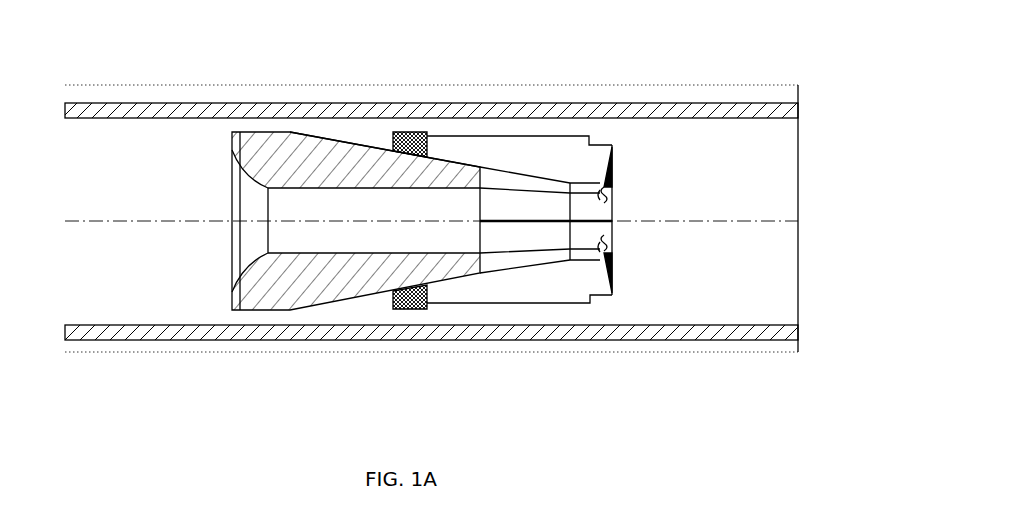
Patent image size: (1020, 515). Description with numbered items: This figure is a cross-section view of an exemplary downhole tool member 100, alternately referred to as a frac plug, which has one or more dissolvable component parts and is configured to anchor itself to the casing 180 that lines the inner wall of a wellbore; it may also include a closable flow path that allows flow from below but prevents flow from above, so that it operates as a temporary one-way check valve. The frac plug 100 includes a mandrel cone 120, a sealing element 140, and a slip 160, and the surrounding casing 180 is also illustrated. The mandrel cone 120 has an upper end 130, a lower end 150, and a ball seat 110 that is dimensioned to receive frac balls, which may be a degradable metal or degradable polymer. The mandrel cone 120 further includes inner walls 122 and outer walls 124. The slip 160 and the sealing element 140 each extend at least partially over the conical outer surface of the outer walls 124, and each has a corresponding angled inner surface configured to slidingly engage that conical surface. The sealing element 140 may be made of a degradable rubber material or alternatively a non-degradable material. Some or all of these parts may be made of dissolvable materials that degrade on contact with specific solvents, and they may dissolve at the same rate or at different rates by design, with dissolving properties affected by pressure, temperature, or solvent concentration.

The downhole tool member 100 is at (620, 192).
The ball seat 110 is at (228, 212).
The mandrel cone 120 is at (298, 159).
The inner walls 122 is at (240, 262).
The outer walls 124 is at (250, 131).
The upper end 130 is at (231, 162).
The sealing element 140 is at (412, 127).
The lower end 150 is at (486, 246).
The slip 160 is at (542, 131).
The casing 180 is at (672, 100).